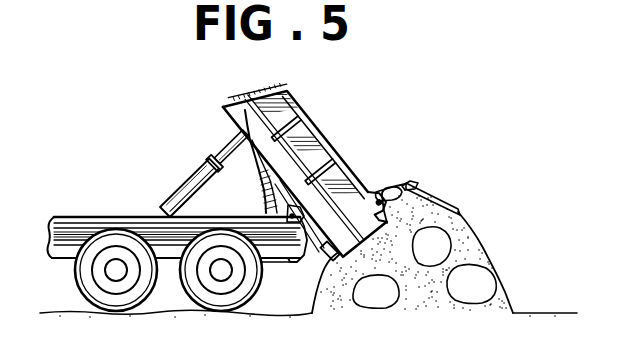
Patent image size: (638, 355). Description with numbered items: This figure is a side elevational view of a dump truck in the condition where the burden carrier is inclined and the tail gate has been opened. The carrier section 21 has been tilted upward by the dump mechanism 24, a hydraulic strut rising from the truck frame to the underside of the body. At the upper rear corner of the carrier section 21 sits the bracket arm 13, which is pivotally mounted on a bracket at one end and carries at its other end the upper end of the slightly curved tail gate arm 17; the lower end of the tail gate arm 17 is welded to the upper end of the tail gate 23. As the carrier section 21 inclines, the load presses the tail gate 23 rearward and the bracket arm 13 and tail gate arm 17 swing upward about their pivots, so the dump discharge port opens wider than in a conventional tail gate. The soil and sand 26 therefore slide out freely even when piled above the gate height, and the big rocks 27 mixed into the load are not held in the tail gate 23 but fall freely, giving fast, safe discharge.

The bracket arm 13 is at (389, 186).
The tail gate arm 17 is at (418, 183).
The carrier section 21 is at (312, 128).
The tail gate 23 is at (452, 203).
The dump mechanism 24 is at (202, 175).
The soil and sand 26 is at (475, 242).
The big rocks 27 is at (477, 289).